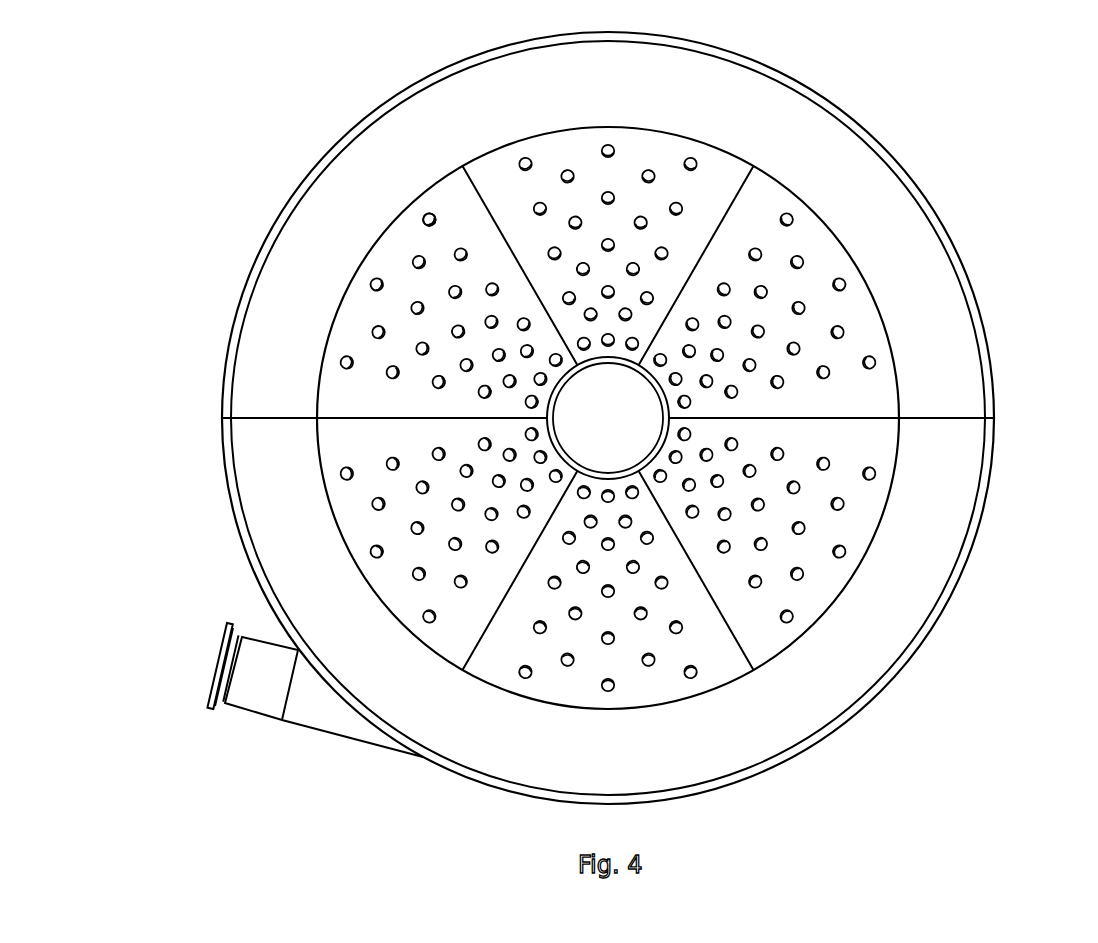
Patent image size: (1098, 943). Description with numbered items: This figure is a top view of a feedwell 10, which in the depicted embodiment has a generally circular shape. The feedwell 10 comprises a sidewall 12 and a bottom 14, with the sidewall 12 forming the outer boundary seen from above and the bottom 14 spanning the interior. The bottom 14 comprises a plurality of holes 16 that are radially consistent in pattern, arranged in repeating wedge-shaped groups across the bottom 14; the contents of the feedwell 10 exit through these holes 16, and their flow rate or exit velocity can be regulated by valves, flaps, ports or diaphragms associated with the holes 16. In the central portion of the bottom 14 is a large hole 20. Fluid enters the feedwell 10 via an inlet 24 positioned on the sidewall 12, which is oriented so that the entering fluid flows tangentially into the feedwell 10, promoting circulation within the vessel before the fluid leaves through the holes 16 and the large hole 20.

The feedwell 10 is at (592, 408).
The sidewall 12 is at (843, 113).
The bottom 14 is at (637, 88).
The holes 16 is at (424, 213).
The large hole 20 is at (618, 423).
The inlet 24 is at (222, 661).